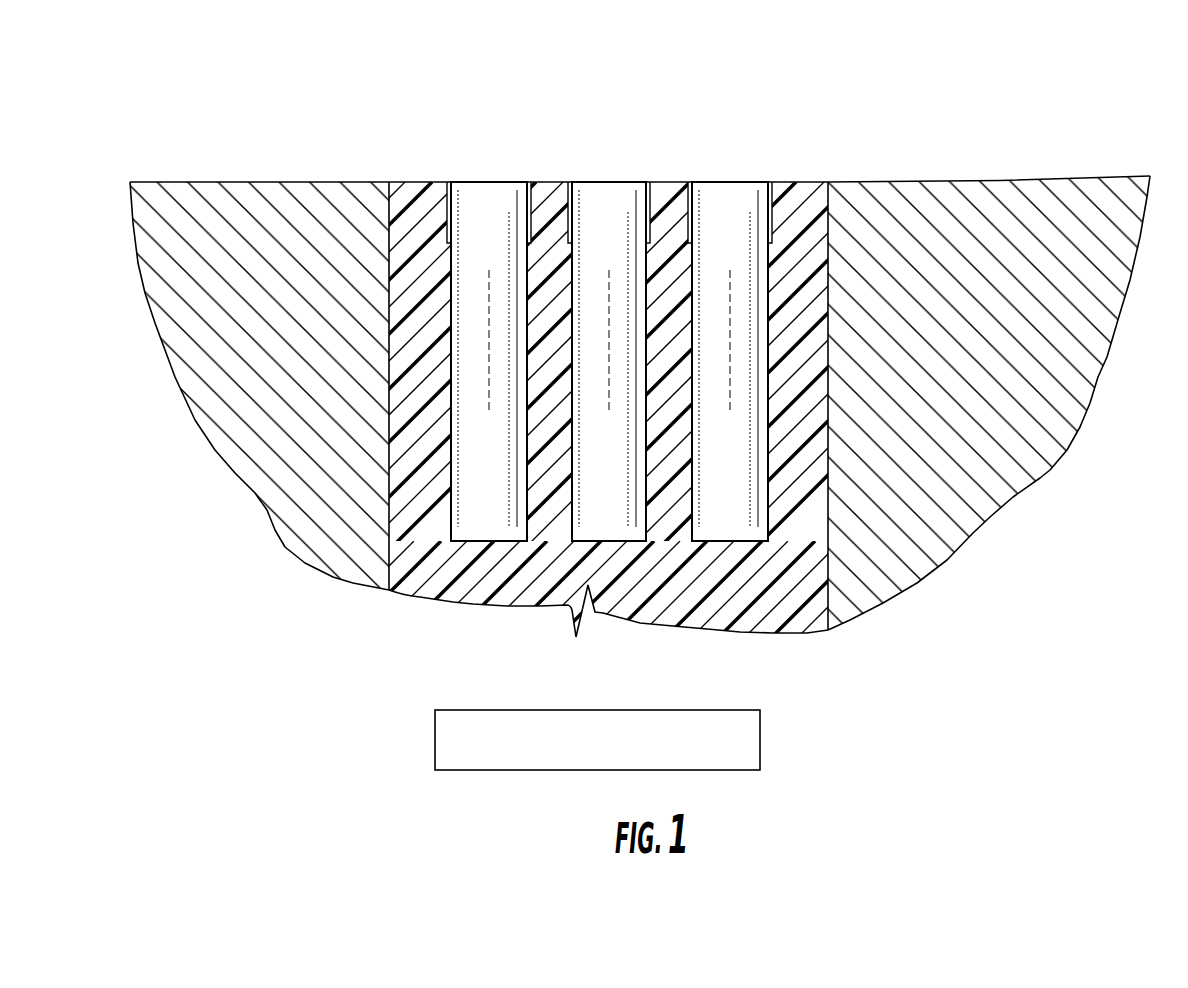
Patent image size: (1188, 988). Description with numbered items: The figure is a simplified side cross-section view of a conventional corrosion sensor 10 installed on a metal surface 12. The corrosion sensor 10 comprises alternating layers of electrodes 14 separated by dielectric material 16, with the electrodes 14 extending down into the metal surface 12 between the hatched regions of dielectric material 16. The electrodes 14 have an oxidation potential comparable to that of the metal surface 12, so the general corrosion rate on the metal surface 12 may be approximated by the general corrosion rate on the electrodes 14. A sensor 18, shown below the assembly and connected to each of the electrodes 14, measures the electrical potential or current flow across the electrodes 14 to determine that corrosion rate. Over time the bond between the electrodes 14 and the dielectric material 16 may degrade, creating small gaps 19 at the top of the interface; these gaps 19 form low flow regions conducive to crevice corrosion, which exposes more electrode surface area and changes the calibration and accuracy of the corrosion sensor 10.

The conventional corrosion sensor 10 is at (810, 148).
The metal surface 12 is at (177, 376).
The electrodes 14 is at (498, 182).
The dielectric material 16 is at (419, 182).
The sensor 18 is at (727, 541).
The gaps 19 is at (450, 182).